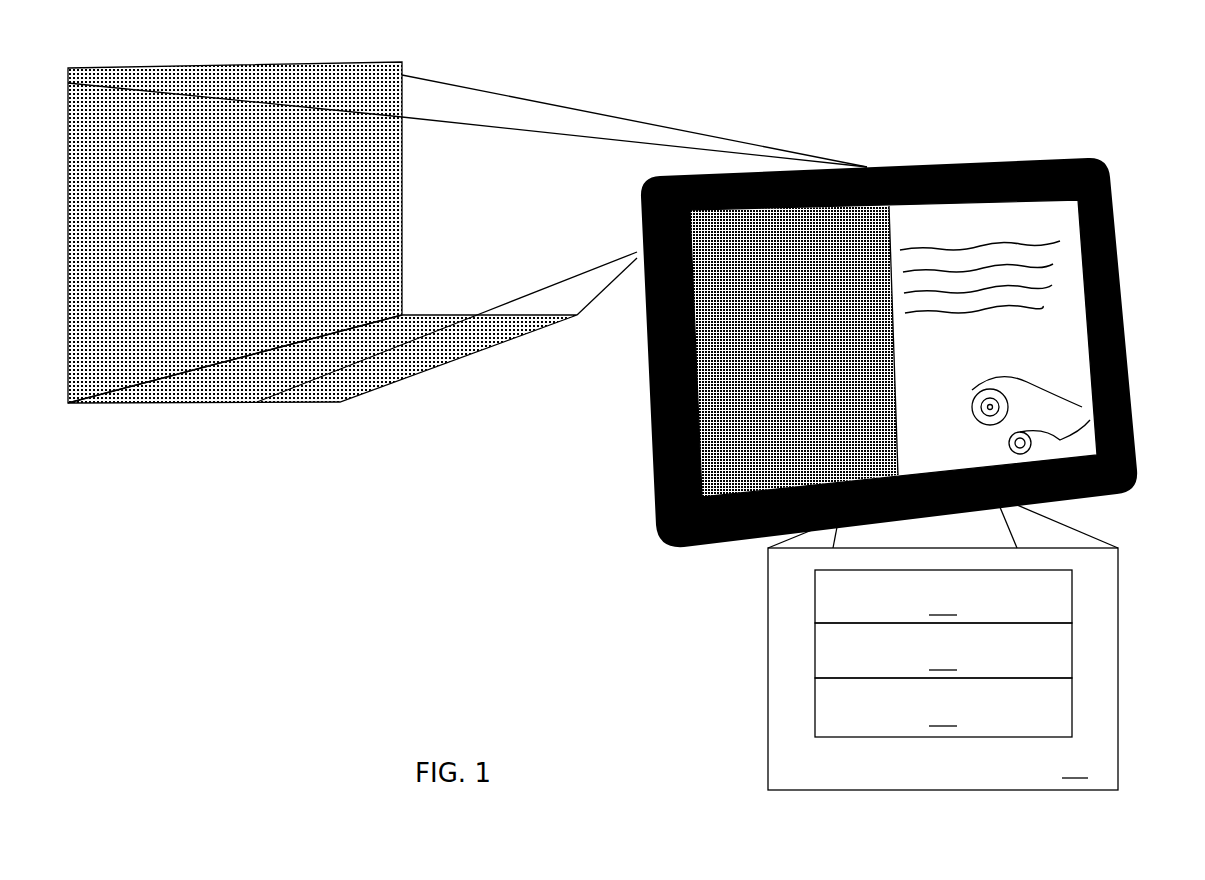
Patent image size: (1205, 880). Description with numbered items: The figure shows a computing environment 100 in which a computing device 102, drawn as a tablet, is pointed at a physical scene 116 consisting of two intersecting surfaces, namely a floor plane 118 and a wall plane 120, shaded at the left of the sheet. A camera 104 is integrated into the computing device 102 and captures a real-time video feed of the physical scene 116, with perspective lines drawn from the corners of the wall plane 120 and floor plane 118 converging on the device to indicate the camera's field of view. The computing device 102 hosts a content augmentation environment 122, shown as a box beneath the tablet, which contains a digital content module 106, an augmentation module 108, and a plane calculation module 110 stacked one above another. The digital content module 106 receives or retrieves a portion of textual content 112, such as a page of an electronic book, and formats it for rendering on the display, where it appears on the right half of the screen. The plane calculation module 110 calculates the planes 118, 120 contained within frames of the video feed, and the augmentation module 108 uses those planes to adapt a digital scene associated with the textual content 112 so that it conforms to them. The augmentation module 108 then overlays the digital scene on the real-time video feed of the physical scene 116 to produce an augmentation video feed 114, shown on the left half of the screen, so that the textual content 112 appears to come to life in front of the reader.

The computing environment 100 is at (1092, 61).
The computing device 102 is at (657, 528).
The camera 104 is at (870, 165).
The digital content module 106 is at (943, 596).
The augmentation module 108 is at (943, 650).
The plane calculation module 110 is at (943, 707).
The textual content 112 is at (1063, 257).
The augmentation video feed 114 is at (752, 497).
The physical scene 116 is at (276, 468).
The plane 118 is at (185, 403).
The plane 120 is at (386, 59).
The content augmentation environment 122 is at (943, 645).